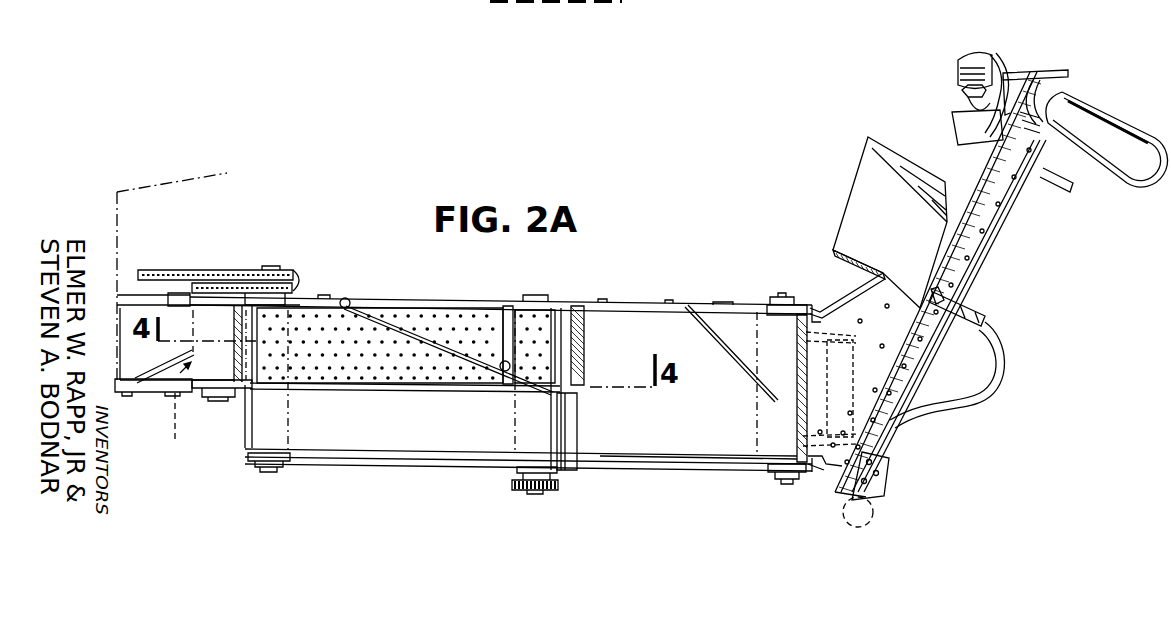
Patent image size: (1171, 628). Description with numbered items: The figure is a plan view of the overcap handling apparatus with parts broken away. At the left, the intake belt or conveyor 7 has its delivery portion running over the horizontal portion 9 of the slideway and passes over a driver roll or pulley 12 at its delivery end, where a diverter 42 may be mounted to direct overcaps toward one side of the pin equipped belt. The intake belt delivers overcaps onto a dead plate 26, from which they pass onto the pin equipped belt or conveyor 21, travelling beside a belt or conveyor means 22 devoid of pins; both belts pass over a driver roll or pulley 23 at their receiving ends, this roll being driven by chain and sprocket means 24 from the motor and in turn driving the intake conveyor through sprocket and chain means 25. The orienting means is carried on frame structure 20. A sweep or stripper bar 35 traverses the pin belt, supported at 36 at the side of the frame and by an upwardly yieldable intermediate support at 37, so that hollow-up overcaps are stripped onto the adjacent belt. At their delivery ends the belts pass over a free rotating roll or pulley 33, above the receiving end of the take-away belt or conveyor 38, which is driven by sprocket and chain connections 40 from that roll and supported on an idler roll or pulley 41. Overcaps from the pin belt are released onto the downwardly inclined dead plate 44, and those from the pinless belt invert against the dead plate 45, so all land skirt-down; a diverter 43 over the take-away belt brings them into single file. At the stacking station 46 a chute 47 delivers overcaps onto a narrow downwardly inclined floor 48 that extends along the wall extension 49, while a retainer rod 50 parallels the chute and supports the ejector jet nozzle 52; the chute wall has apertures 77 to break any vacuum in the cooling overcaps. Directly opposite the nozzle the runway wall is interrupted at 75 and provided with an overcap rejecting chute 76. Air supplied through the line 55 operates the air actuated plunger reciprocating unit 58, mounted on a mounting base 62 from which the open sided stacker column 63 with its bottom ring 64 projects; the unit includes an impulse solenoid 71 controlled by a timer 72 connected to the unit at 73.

The intake belt or conveyor 7 is at (178, 293).
The horizontal portion of the slideway 9 is at (134, 388).
The driver roll or pulley 12 is at (164, 430).
The frame structure 20 is at (470, 466).
The pin equipped belt or conveyor 21 is at (420, 308).
The belt or conveyor means devoid of pins 22 is at (392, 452).
The driver roll or pulley 23 is at (285, 419).
The chain and sprocket means 24 is at (238, 270).
The sprocket and chain means 25 is at (296, 284).
The dead plate 26 is at (250, 345).
The free rotating roll or pulley 33 is at (532, 426).
The sweep or stripper bar 35 is at (448, 343).
The side support 36 is at (350, 300).
The upwardly yieldable intermediate support 37 is at (503, 372).
The take-away belt or conveyor 38 is at (645, 470).
The sprocket and chain connections 40 is at (512, 492).
The idler roll or pulley 41 is at (767, 423).
The diverter 42 is at (165, 368).
The diverter 43 is at (740, 357).
The dead plate 44 is at (588, 342).
The dead plate 45 is at (578, 428).
The stacking station 46 is at (934, 366).
The chute 47 is at (842, 302).
The downwardly inclined floor 48 is at (992, 264).
The wall extension 49 is at (993, 163).
The retainer rod 50 is at (1000, 232).
The ejector jet nozzle 52 is at (935, 306).
The air line 55 is at (965, 108).
The plunger reciprocating unit 58 is at (990, 55).
The mounting base 62 is at (1040, 72).
The stacker column 63 is at (1113, 182).
The bottom ring 64 is at (1058, 85).
The impulse solenoid 71 is at (970, 58).
The timer 72 is at (890, 466).
The timer connection 73 is at (962, 88).
The interruption in runway wall 75 is at (947, 238).
The overcap rejecting chute 76 is at (868, 212).
The apertures 77 is at (805, 378).